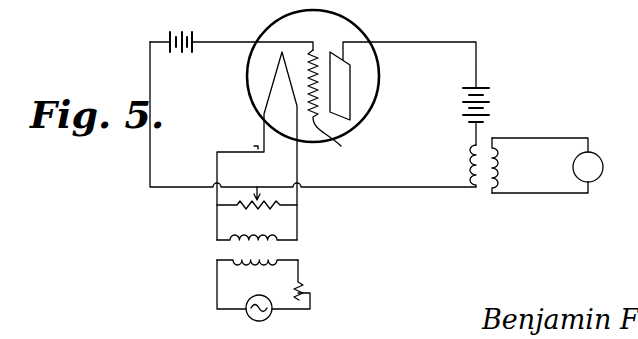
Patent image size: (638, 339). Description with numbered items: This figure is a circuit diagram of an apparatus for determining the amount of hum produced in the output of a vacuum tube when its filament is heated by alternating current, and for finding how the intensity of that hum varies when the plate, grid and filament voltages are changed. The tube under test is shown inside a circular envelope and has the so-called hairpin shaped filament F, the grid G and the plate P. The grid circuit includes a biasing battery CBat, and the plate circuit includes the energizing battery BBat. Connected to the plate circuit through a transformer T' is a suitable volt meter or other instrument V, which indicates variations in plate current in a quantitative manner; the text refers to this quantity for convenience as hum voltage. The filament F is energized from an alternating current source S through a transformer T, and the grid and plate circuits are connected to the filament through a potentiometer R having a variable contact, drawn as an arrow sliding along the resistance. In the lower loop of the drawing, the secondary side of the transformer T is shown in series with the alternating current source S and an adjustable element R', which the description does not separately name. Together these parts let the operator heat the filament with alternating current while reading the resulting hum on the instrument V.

The biasing battery CBat is at (183, 26).
The hairpin shaped filament F is at (276, 72).
The grid G is at (333, 105).
The plate P is at (342, 74).
The energizing battery BBat is at (505, 111).
The transformer T' is at (488, 179).
The volt meter V is at (547, 165).
The potentiometer R is at (268, 205).
The transformer T is at (277, 250).
The rheostat R' is at (323, 280).
The alternating current source S is at (268, 318).